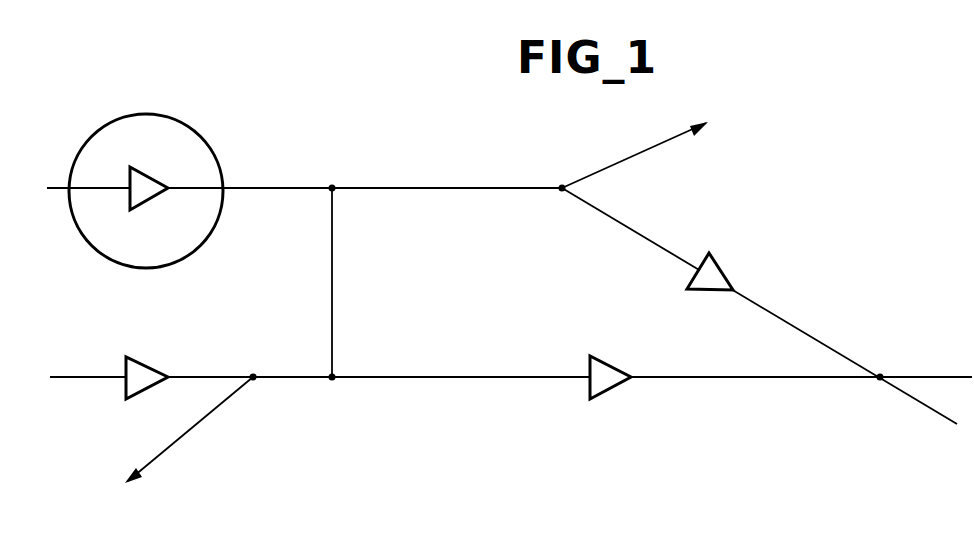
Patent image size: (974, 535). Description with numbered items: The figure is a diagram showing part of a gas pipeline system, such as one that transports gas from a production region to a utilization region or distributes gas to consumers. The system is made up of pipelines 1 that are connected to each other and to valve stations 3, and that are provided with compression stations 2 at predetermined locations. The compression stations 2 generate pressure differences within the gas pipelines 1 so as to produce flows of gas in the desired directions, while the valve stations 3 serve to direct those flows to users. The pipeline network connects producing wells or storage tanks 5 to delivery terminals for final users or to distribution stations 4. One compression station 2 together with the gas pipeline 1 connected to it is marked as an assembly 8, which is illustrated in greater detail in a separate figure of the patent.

The pipelines 1 is at (86, 186).
The compression stations 2 is at (144, 168).
The valve stations 3 is at (334, 185).
The distribution stations 4 is at (708, 128).
The producing wells or storage tanks 5 is at (134, 482).
The assembly 8 is at (213, 148).